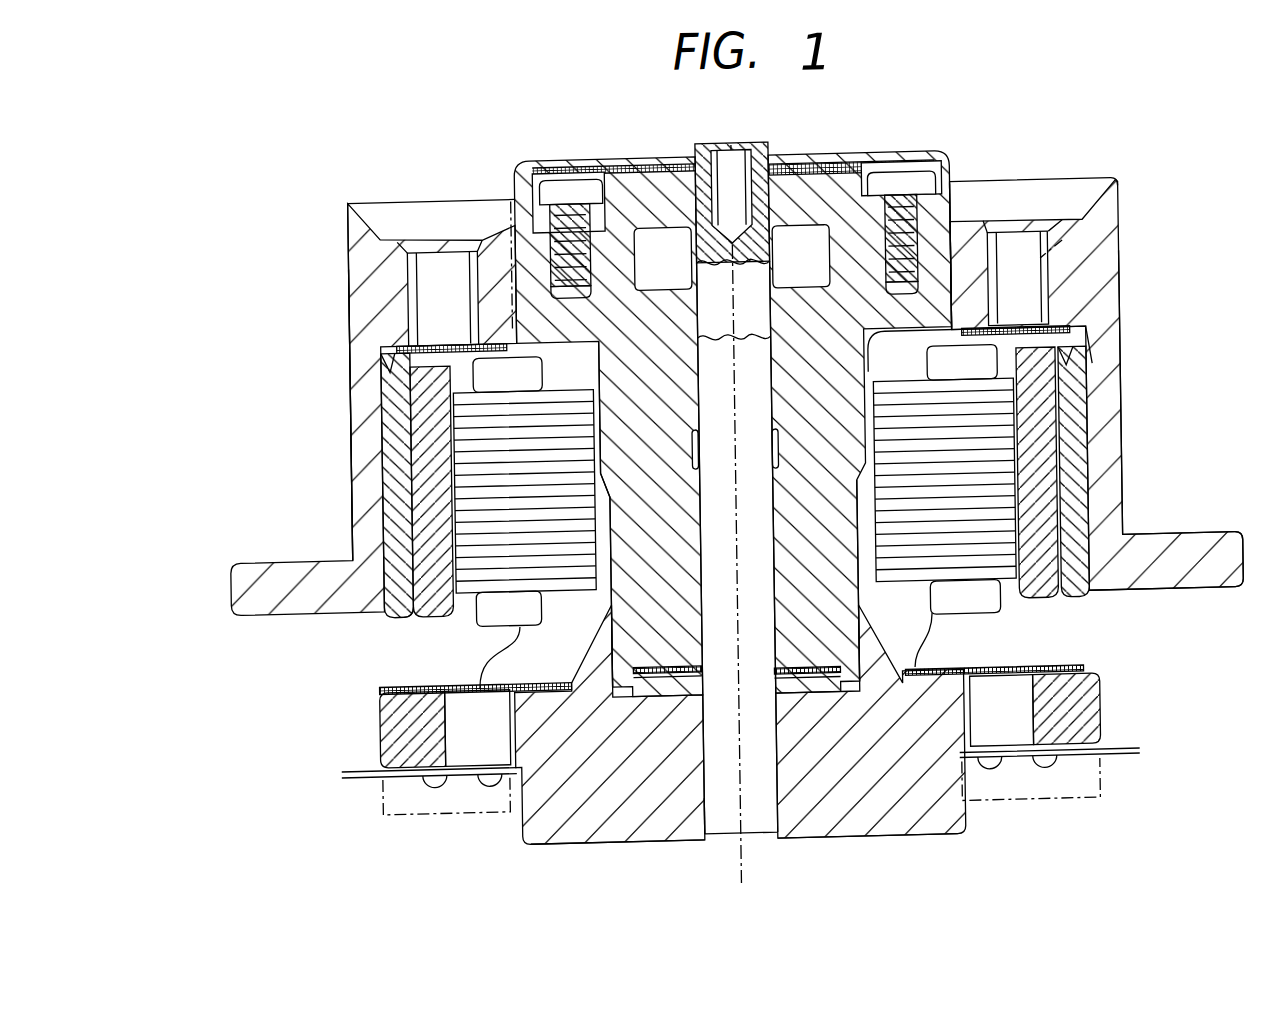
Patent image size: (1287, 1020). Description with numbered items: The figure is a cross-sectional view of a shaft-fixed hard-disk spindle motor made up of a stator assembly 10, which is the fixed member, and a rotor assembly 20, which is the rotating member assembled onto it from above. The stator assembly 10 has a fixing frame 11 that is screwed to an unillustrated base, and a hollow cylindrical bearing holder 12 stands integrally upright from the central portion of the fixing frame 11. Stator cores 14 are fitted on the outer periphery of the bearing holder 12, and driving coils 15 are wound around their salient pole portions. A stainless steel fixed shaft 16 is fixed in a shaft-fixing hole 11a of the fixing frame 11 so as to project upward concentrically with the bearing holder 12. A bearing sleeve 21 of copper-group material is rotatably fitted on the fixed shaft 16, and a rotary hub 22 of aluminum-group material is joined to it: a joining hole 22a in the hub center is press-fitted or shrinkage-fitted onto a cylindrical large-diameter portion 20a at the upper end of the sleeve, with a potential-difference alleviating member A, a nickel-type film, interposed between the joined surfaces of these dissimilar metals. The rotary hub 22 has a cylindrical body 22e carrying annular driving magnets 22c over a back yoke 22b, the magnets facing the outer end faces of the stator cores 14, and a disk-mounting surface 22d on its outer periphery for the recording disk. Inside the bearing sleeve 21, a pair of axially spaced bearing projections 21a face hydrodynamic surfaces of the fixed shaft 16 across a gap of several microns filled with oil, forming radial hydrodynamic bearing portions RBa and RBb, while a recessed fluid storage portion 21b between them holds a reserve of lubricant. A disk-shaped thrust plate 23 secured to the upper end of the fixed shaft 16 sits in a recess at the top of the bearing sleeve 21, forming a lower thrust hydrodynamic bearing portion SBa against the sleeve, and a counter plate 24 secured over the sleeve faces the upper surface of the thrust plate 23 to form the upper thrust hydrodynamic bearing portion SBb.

The stator assembly 10 is at (970, 820).
The fixing frame 11 is at (905, 844).
The shaft-fixing hole 11a is at (763, 794).
The bearing holder 12 is at (888, 664).
The stator cores 14 is at (545, 481).
The driving coils 15 is at (1012, 337).
The fixed shaft 16 is at (754, 602).
The rotor assembly 20 is at (983, 164).
The large-diameter portion for joining 20a is at (949, 215).
The bearing sleeve 21 is at (860, 381).
The bearing projections 21a is at (697, 377).
The fluid storage portion 21b is at (701, 447).
The rotary hub 22 is at (1112, 267).
The joining hole 22a is at (980, 356).
The back yoke 22b is at (393, 464).
The driving magnets 22c is at (421, 612).
The disk-mounting surface 22d is at (1212, 545).
The cylindrical body 22e is at (361, 418).
The thrust plate 23 is at (818, 271).
The counter plate 24 is at (845, 165).
The lower thrust hydrodynamic bearing portion SBa is at (636, 197).
The screw b SBb is at (659, 198).
The radial hydrodynamic bearing portion RBa is at (744, 340).
The radial hydrodynamic bearing portion RBb is at (772, 543).
The potential-difference alleviating member A is at (514, 194).